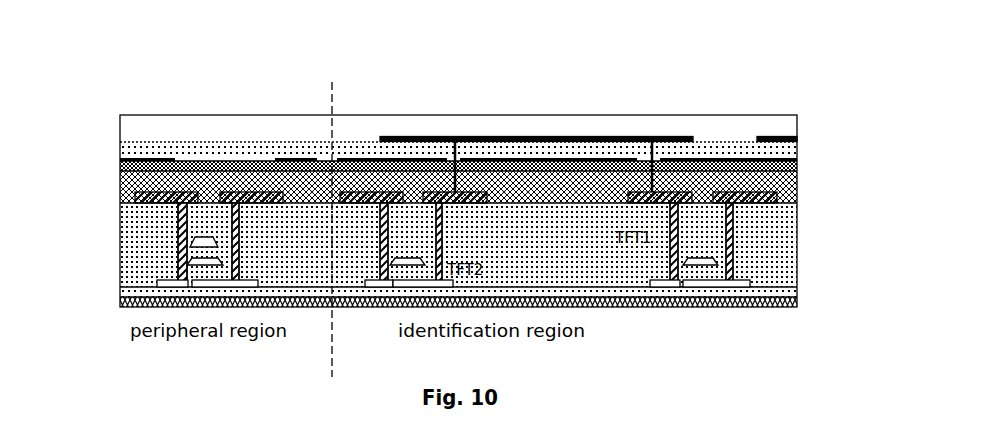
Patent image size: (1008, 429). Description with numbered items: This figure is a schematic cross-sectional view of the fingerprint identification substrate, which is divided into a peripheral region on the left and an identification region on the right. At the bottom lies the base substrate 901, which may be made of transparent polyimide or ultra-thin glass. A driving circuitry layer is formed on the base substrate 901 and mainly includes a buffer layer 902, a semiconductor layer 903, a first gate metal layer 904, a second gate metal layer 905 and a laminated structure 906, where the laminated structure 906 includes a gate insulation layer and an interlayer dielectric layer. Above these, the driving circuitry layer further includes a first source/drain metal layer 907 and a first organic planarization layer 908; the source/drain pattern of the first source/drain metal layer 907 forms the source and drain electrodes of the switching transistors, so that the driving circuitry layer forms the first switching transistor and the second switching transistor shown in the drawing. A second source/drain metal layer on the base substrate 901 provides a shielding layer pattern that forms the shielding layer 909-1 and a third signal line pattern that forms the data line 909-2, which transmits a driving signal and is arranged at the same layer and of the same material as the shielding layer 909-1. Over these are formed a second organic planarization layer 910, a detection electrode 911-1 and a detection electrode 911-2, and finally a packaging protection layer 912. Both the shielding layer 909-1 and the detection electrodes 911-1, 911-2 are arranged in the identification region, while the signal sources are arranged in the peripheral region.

The base substrate 901 is at (785, 300).
The buffer layer 902 is at (767, 290).
The semiconductor layer 903 is at (668, 282).
The first gate metal layer 904 is at (703, 267).
The second gate metal layer 905 is at (210, 240).
The laminated structure 906 is at (773, 233).
The first source/drain metal layer 907 is at (186, 196).
The first organic planarization layer 908 is at (770, 181).
The shielding layer 909-1 is at (772, 160).
The data line 909-2 is at (173, 160).
The second organic planarization layer 910 is at (232, 150).
The detection electrode 911-1 is at (637, 117).
The detection electrode 911-2 is at (777, 135).
The packaging protection layer 912 is at (454, 125).